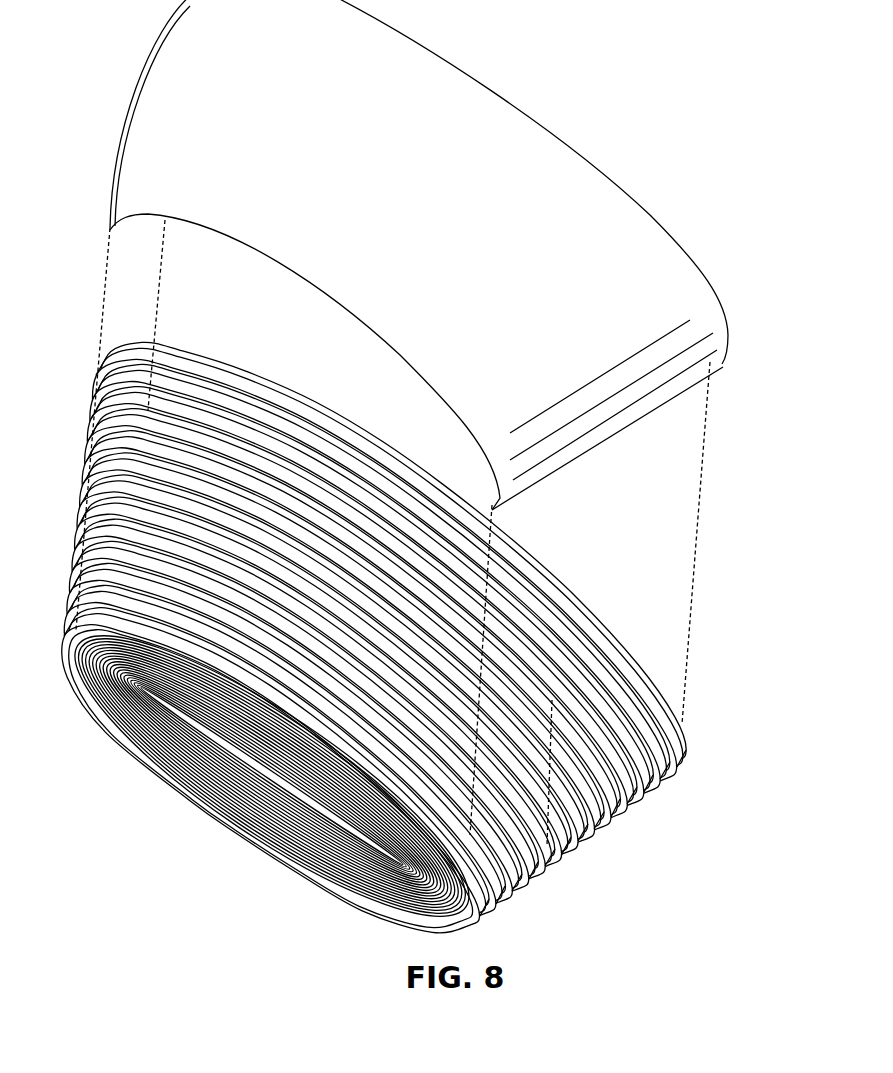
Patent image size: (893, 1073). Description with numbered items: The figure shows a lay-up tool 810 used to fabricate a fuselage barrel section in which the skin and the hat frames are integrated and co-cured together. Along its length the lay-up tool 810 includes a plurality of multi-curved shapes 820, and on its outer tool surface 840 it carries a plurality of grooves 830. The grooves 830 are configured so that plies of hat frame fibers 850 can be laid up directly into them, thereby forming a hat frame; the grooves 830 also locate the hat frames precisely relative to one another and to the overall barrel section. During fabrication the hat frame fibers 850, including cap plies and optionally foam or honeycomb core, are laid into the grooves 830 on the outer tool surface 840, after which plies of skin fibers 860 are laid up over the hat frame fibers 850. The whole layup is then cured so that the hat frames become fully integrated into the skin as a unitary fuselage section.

The lay-up tool 810 is at (401, 630).
The multi-curved shapes 820 is at (363, 677).
The grooves 830 is at (600, 680).
The outer tool surface 840 is at (647, 718).
The hat frame fibers 850 is at (197, 352).
The skin fibers 860 is at (583, 149).